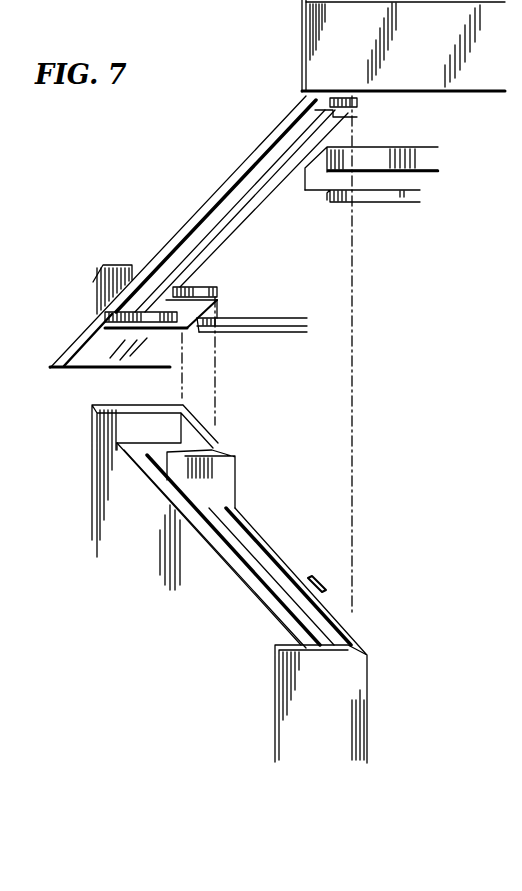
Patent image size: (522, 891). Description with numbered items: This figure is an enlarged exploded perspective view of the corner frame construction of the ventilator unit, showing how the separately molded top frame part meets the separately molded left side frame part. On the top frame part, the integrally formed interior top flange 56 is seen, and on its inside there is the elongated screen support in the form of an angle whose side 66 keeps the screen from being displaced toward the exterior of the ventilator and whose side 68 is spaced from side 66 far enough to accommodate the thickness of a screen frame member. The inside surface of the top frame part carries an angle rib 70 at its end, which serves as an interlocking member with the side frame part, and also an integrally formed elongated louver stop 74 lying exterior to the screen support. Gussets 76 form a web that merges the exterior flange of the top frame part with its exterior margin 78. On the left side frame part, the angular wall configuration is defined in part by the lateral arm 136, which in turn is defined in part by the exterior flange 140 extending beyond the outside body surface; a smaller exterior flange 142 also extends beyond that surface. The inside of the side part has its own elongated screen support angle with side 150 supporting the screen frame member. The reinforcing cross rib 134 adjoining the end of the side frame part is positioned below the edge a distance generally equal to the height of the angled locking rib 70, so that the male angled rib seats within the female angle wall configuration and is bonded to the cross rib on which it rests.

The interior top flange 56 is at (328, 44).
The side of top screen support 66 is at (380, 155).
The side of top screen support 68 is at (380, 197).
The angle rib 70 is at (222, 233).
The louver stop 74 is at (260, 322).
The gusset 76 is at (77, 322).
The exterior margin 78 is at (122, 270).
The reinforcing cross rib 134 is at (260, 582).
The lateral arm 136 is at (190, 432).
The exterior flange 140 is at (138, 403).
The smaller exterior flange 142 is at (320, 724).
The side of screen support 150 is at (325, 560).